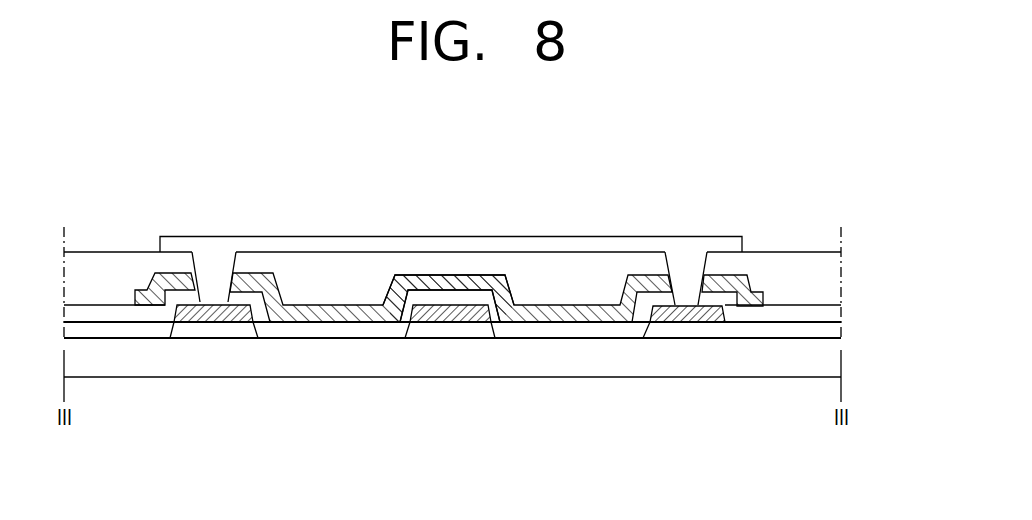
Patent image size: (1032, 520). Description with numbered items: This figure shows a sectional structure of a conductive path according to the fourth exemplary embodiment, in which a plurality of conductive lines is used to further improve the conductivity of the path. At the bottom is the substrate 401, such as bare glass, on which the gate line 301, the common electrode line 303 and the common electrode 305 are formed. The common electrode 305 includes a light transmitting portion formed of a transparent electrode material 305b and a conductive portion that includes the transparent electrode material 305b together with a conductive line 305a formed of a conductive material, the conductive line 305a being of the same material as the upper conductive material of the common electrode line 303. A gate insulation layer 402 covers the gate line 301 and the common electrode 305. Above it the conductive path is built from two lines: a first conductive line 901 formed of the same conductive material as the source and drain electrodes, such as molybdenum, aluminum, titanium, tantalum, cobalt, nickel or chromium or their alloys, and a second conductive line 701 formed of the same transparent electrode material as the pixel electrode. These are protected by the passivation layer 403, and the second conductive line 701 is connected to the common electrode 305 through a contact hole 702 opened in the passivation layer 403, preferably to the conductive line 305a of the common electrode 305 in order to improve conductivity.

The gate line 301 is at (448, 322).
The common electrode line 303 is at (208, 322).
The common electrode 305 is at (742, 397).
The conductive line 305a is at (684, 322).
The transparent electrode material 305b is at (750, 322).
The substrate 401 is at (815, 365).
The gate insulation layer 402 is at (815, 306).
The passivation layer 403 is at (815, 282).
The conductive line 701 is at (326, 243).
The contact hole 702 is at (688, 270).
The first conductive line 901 is at (456, 278).